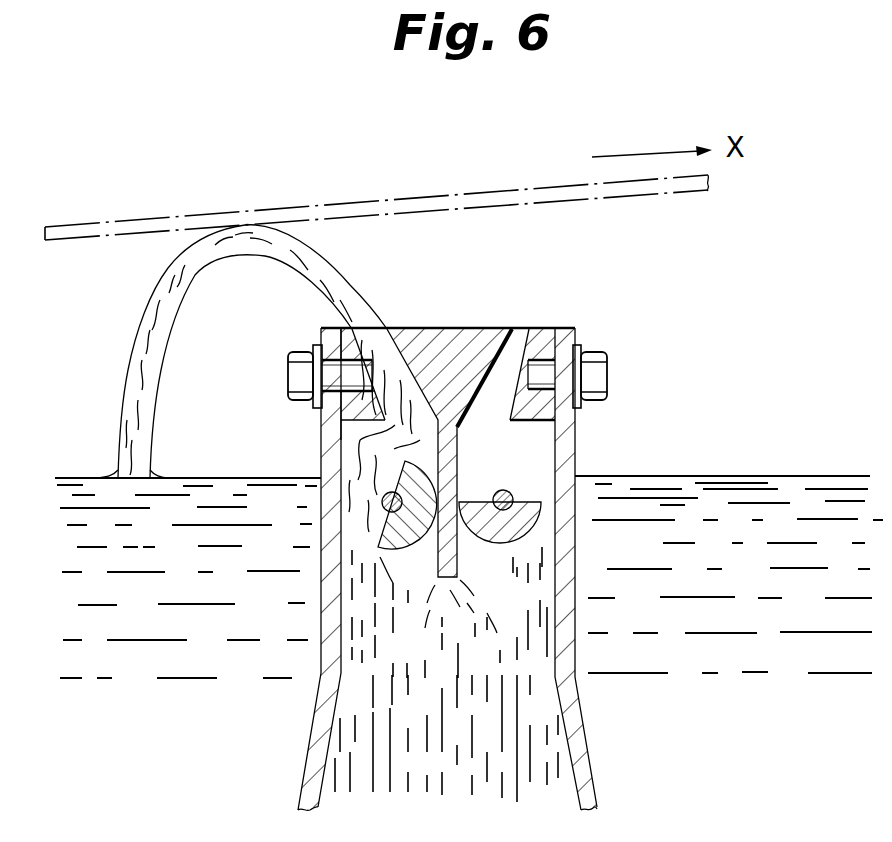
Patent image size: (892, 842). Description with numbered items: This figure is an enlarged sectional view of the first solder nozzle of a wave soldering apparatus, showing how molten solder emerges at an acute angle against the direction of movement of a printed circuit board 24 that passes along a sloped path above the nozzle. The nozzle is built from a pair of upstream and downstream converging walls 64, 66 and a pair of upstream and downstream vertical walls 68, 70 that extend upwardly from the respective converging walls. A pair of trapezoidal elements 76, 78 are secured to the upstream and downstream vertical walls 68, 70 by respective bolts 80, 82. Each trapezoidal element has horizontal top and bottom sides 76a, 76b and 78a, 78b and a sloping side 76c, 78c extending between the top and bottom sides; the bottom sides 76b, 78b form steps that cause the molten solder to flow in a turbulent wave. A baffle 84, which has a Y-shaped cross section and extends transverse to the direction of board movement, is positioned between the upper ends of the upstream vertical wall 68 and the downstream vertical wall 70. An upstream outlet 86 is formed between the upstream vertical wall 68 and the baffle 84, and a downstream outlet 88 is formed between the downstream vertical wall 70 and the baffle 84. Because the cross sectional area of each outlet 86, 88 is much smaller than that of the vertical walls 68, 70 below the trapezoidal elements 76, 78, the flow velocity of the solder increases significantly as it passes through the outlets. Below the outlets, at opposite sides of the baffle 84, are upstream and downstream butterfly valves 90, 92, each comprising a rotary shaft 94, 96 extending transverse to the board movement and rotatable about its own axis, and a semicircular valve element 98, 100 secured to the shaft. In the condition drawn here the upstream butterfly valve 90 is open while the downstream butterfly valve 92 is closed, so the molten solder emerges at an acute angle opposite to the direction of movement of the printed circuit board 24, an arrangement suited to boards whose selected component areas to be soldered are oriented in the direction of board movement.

The printed circuit board 24 is at (122, 204).
The upstream converging wall 64 is at (307, 784).
The downstream converging wall 66 is at (583, 755).
The upstream vertical wall 68 is at (332, 585).
The downstream vertical wall 70 is at (567, 588).
The upstream trapezoidal element 76 is at (335, 347).
The top side of upstream trapezoidal element 76a is at (340, 332).
The bottom side of upstream trapezoidal element 76b is at (342, 430).
The sloping side of upstream trapezoidal element 76c is at (407, 328).
The downstream trapezoidal element 78 is at (571, 343).
The top side of downstream trapezoidal element 78a is at (543, 328).
The bottom side of downstream trapezoidal element 78b is at (558, 430).
The sloping side of downstream trapezoidal element 78c is at (499, 391).
The bolt 80 is at (295, 348).
The bolt 82 is at (600, 346).
The baffle 84 is at (482, 328).
The upstream outlet 86 is at (382, 332).
The downstream outlet 88 is at (521, 342).
The upstream butterfly valve 90 is at (392, 526).
The downstream butterfly valve 92 is at (522, 518).
The rotary shaft 94 is at (383, 500).
The rotary shaft 96 is at (510, 496).
The semicircular valve element 98 is at (406, 540).
The semicircular valve element 100 is at (508, 548).